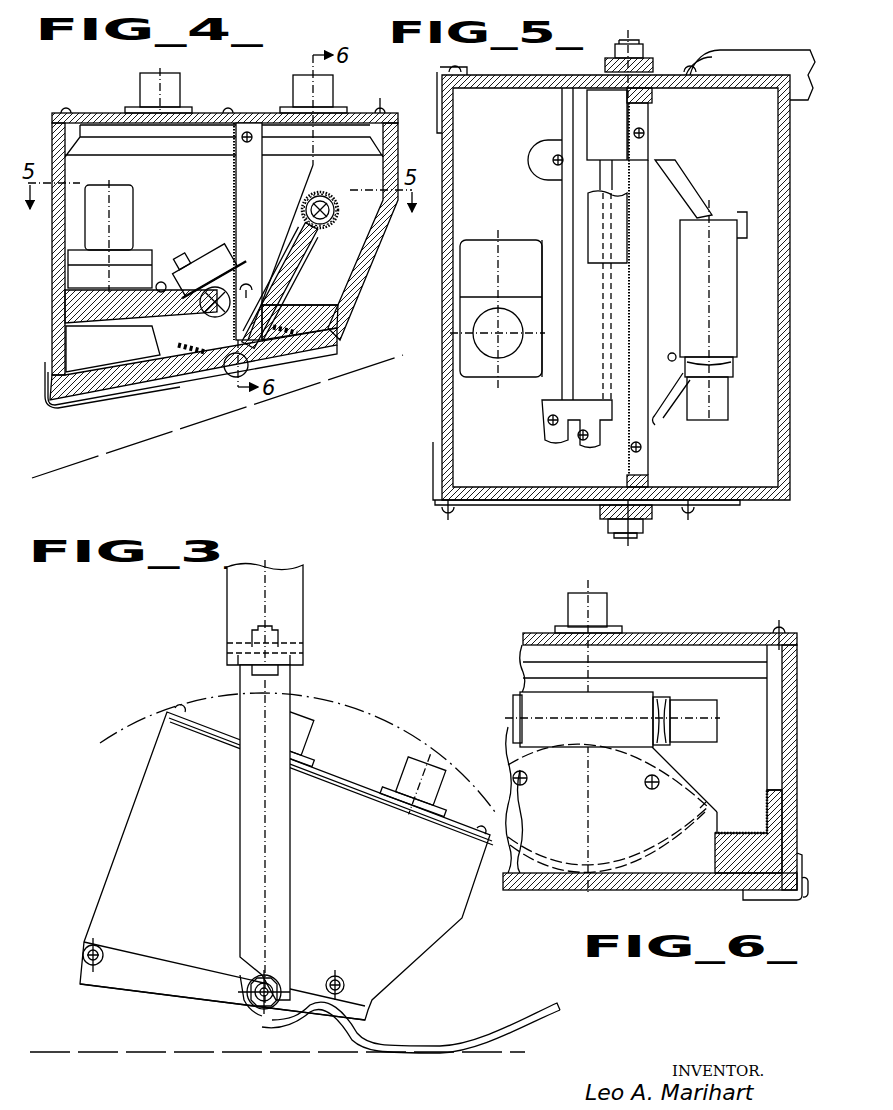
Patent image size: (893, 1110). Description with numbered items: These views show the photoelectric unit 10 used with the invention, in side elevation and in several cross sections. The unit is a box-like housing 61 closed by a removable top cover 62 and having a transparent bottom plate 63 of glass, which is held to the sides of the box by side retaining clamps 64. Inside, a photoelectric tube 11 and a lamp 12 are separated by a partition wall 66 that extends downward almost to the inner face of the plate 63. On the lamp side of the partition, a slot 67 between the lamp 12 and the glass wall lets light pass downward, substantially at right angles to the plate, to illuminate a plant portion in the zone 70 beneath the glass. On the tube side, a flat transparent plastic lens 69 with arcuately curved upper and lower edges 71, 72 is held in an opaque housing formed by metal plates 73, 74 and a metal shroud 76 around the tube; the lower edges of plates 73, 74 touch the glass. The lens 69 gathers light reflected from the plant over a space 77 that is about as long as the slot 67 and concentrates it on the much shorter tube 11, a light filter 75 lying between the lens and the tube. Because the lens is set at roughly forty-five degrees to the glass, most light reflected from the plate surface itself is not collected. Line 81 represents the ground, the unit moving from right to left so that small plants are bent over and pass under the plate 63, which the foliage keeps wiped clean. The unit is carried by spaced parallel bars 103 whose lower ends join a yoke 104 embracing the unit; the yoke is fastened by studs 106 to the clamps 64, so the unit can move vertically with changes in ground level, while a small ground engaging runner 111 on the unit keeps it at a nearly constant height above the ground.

In FIG. 4, the photoelectric unit 10 is at (95, 112).
In FIG. 5, the photoelectric unit 10 is at (503, 505).
In FIG. 3, the photoelectric unit 10 is at (128, 818).
In FIG. 6, the photoelectric unit 10 is at (730, 632).
In FIG. 4, the photoelectric tube 11 is at (332, 208).
In FIG. 5, the photoelectric tube 11 is at (730, 399).
In FIG. 6, the photoelectric tube 11 is at (706, 706).
In FIG. 4, the lamp 12 is at (212, 266).
In FIG. 5, the lamp 12 is at (590, 220).
In FIG. 4, the box-like housing 61 is at (230, 249).
In FIG. 5, the box-like housing 61 is at (778, 440).
In FIG. 3, the box-like housing 61 is at (153, 778).
In FIG. 6, the box-like housing 61 is at (785, 769).
In FIG. 4, the removable top cover 62 is at (218, 113).
In FIG. 3, the removable top cover 62 is at (335, 778).
In FIG. 6, the removable top cover 62 is at (666, 627).
In FIG. 4, the transparent bottom plate 63 is at (136, 380).
In FIG. 6, the transparent bottom plate 63 is at (645, 888).
In FIG. 4, the side retaining clamps 64 is at (75, 392).
In FIG. 5, the side retaining clamps 64 is at (517, 69).
In FIG. 3, the side retaining clamps 64 is at (128, 985).
In FIG. 6, the side retaining clamps 64 is at (740, 897).
In FIG. 4, the partition wall 66 is at (236, 171).
In FIG. 5, the partition wall 66 is at (649, 317).
In FIG. 4, the slot 67 is at (215, 332).
In FIG. 5, the slot 67 is at (618, 186).
In FIG. 6, the slot 67 is at (715, 861).
In FIG. 4, the lens 69 is at (290, 287).
In FIG. 6, the lens 69 is at (684, 786).
In FIG. 4, the illuminated zone 70 is at (222, 372).
In FIG. 4, the upper curved edge of lens 71 is at (300, 242).
In FIG. 6, the upper curved edge of lens 71 is at (672, 766).
In FIG. 4, the lower curved edge of lens 72 is at (285, 348).
In FIG. 6, the lower curved edge of lens 72 is at (684, 831).
In FIG. 4, the metal plate 73 is at (276, 228).
In FIG. 5, the metal plate 73 is at (667, 422).
In FIG. 3, the metal plate 73 is at (512, 753).
In FIG. 6, the metal plate 73 is at (520, 747).
In FIG. 4, the metal plate 74 is at (300, 263).
In FIG. 4, the light filter 75 is at (335, 222).
In FIG. 4, the metal shroud 76 is at (323, 196).
In FIG. 5, the metal shroud 76 is at (735, 317).
In FIG. 6, the metal shroud 76 is at (608, 737).
In FIG. 4, the light collecting space 77 is at (248, 355).
In FIG. 4, the ground surface line 81 is at (156, 439).
In FIG. 3, the ground surface line 81 is at (92, 1061).
In FIG. 3, the parallel bars 103 is at (298, 628).
In FIG. 5, the yoke 104 is at (605, 62).
In FIG. 3, the yoke 104 is at (282, 867).
In FIG. 5, the studs 106 is at (638, 48).
In FIG. 3, the studs 106 is at (250, 1012).
In FIG. 6, the studs 106 is at (802, 900).
In FIG. 5, the ground engaging runner 111 is at (750, 58).
In FIG. 3, the ground engaging runner 111 is at (436, 1029).